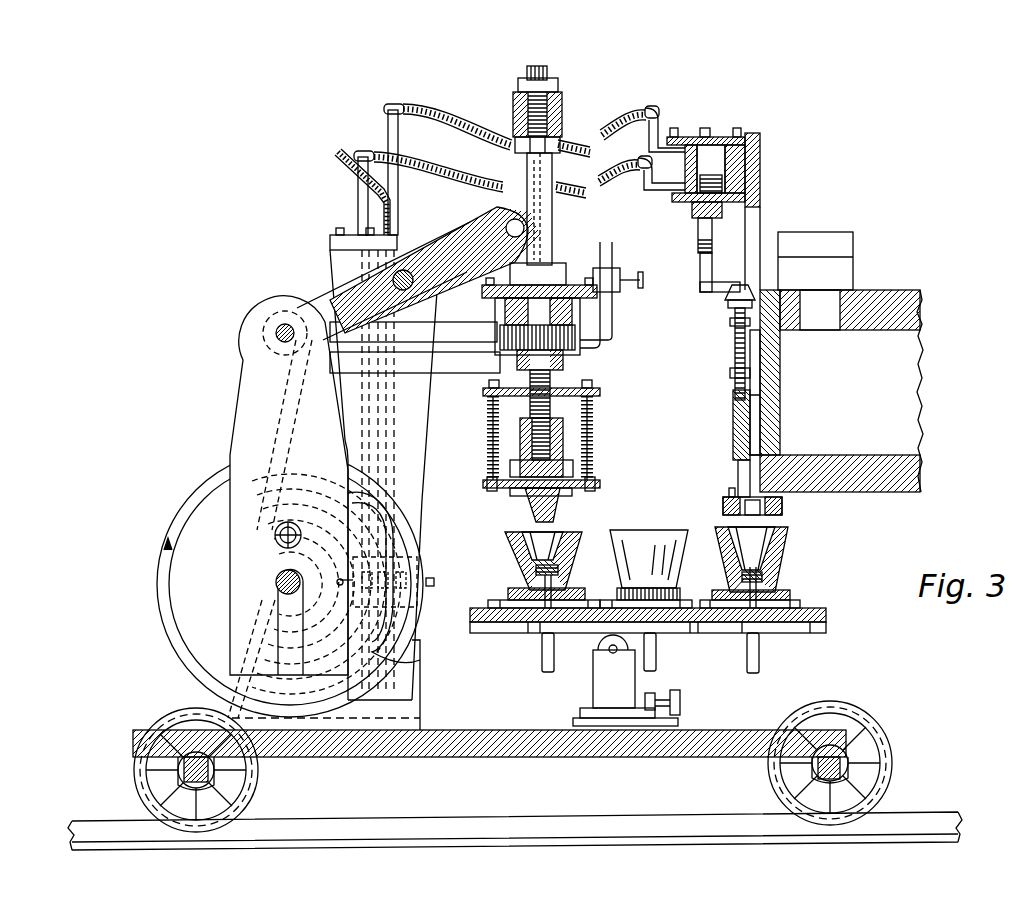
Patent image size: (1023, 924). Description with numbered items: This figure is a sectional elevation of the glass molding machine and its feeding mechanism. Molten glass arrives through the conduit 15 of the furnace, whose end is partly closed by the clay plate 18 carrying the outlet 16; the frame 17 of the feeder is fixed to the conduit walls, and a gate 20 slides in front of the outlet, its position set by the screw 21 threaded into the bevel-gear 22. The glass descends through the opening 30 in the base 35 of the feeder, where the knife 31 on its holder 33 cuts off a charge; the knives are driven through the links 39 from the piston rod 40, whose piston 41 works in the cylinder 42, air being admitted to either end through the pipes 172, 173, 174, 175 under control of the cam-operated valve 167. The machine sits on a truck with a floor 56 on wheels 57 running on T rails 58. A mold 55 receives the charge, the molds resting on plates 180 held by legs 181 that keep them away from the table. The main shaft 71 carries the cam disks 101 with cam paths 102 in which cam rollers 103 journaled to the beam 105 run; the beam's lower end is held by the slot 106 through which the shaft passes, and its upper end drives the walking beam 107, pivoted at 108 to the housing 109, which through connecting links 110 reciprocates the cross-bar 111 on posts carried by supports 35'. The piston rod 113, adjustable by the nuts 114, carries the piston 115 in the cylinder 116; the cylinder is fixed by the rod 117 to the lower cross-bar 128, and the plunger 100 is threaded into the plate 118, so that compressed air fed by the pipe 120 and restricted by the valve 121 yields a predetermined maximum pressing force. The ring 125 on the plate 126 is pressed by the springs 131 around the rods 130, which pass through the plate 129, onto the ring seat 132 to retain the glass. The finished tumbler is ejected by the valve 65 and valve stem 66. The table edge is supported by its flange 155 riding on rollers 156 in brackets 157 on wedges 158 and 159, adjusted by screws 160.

The conduit 15 is at (922, 414).
The outlet 16 is at (772, 440).
The frame 17 is at (763, 200).
The clay plate 18 is at (782, 355).
The gate 20 is at (735, 452).
The screw 21 is at (735, 326).
The bevel-gear 22 is at (732, 294).
The opening 30 is at (760, 516).
The knife 31 is at (785, 505).
The holder 33 is at (725, 505).
The base 35 is at (712, 485).
The supports 35' is at (415, 371).
The links 39 is at (700, 270).
The piston rod 40 is at (695, 240).
The piston 41 is at (755, 176).
The cylinder 42 is at (762, 143).
The mold 55 is at (642, 530).
The floor 56 is at (748, 730).
The wheels 57 is at (258, 780).
The T rails 58 is at (654, 818).
The valve 65 is at (772, 572).
The valve stem 66 is at (657, 655).
The main shaft 71 is at (300, 598).
The plunger 100 is at (562, 510).
The cam disks 101 is at (215, 485).
The cam paths 102 is at (400, 640).
The cam rollers 103 is at (284, 522).
The beam 105 is at (230, 433).
The slot 106 is at (310, 678).
The walking beam 107 is at (318, 295).
The pivot 108 is at (390, 262).
The housing 109 is at (415, 460).
The connecting links 110 is at (518, 162).
The cross-bar 111 is at (562, 108).
The piston rod 113 is at (552, 225).
The nuts 114 is at (560, 84).
The piston 115 is at (560, 300).
The cylinder 116 is at (497, 333).
The rod 117 is at (565, 363).
The plate 118 is at (575, 463).
The pipe 120 is at (612, 315).
The valve 121 is at (613, 270).
The ring 125 is at (527, 495).
The plate 126 is at (600, 486).
The cross-bar 128 is at (565, 447).
The plate 129 is at (595, 404).
The rods 130 is at (602, 390).
The springs 131 is at (565, 430).
The ring seat 132 is at (520, 532).
The flange 155 is at (508, 634).
The rollers 156 is at (598, 648).
The brackets 157 is at (593, 687).
The wedge 158 is at (580, 713).
The wedge 159 is at (680, 718).
The screws 160 is at (660, 697).
The valve 167 is at (432, 586).
The pipe 172 is at (360, 203).
The pipe 173 is at (388, 215).
The pipe 174 is at (612, 128).
The pipe 175 is at (596, 180).
The plates 180 is at (513, 590).
The legs 181 is at (488, 610).